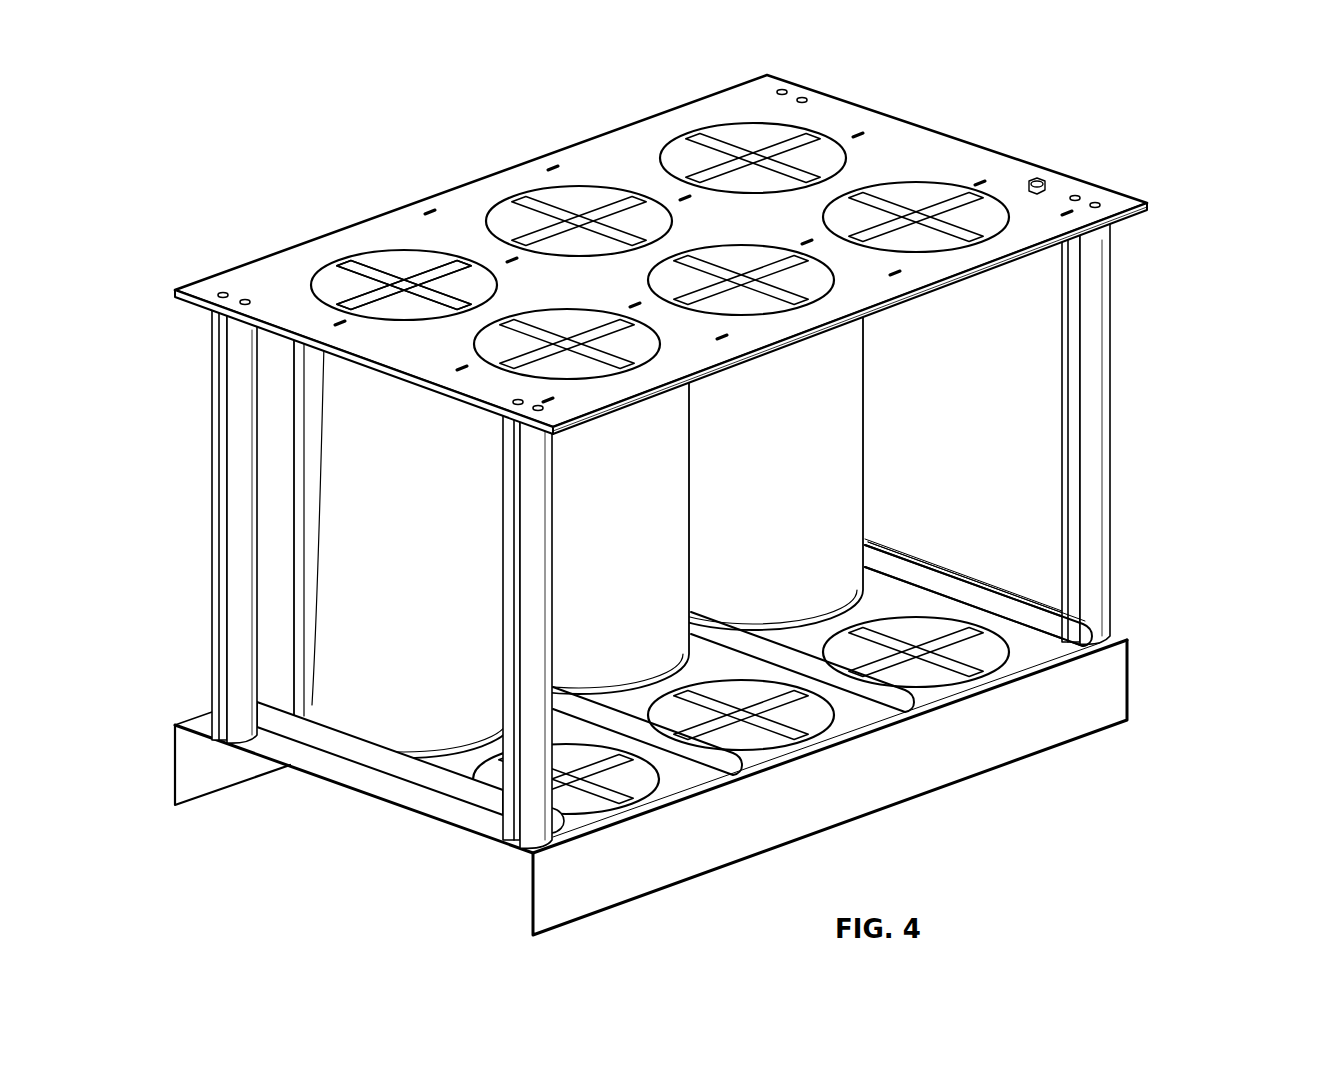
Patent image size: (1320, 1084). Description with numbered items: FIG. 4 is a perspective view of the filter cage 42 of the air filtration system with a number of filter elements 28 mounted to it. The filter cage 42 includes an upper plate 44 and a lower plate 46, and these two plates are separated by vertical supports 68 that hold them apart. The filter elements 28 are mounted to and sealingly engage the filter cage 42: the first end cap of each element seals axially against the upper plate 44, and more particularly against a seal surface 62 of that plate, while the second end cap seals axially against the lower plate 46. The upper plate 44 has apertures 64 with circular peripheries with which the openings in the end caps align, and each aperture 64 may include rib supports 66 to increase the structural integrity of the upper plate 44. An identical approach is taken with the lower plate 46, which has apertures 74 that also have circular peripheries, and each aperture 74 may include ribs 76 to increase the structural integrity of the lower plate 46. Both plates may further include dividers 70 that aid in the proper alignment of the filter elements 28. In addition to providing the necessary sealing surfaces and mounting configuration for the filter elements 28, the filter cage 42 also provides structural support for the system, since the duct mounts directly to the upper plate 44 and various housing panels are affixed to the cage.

The filter cage 42 is at (1188, 144).
The upper plate 44 is at (661, 245).
The lower plate 46 is at (198, 723).
The filter element 28 is at (335, 455).
The seal surface 62 is at (952, 287).
The aperture 64 is at (317, 272).
The rib support 66 is at (413, 273).
The vertical support 68 is at (1110, 440).
The divider 70 is at (283, 722).
The aperture 74 is at (1077, 640).
The rib 76 is at (950, 627).